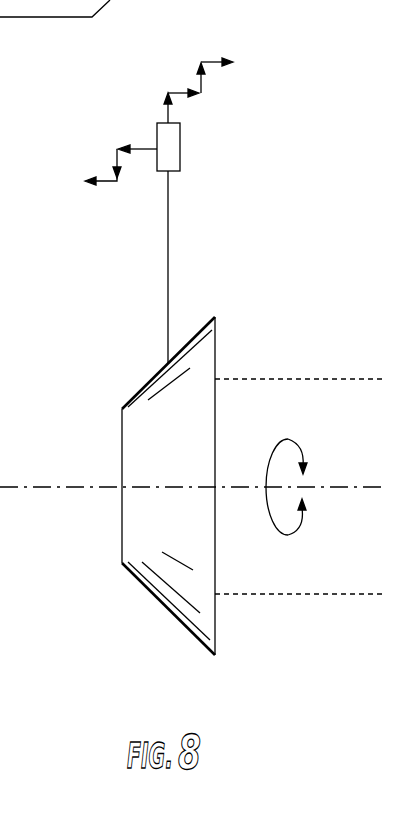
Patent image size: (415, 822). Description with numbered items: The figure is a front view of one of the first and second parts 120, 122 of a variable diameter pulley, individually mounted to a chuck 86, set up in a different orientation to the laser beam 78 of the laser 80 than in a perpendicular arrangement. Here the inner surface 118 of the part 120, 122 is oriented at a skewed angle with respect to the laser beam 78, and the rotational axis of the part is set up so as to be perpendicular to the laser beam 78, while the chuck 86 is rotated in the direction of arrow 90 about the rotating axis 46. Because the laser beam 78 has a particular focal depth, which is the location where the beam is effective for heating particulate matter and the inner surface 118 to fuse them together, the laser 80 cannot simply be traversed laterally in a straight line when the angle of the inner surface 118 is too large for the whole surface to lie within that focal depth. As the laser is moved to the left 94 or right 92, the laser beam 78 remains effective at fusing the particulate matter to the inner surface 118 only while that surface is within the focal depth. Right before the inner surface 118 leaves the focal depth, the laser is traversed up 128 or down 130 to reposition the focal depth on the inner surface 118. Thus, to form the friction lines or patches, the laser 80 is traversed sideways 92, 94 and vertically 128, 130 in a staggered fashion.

The rotating axis 46 is at (50, 487).
The laser beam 78 is at (168, 285).
The laser 80 is at (180, 155).
The chuck 86 is at (318, 378).
The arrow (direction of chuck rotation) 90 is at (298, 443).
The arrow (right lateral laser traverse direction) 92 is at (181, 93).
The arrow (left lateral laser traverse direction) 94 is at (139, 150).
The inner surface 118 is at (132, 399).
The first part 120 is at (205, 611).
The second part 122 is at (171, 582).
The up traverse direction (rotational axis) 128 is at (203, 83).
The down traverse direction 130 is at (117, 163).